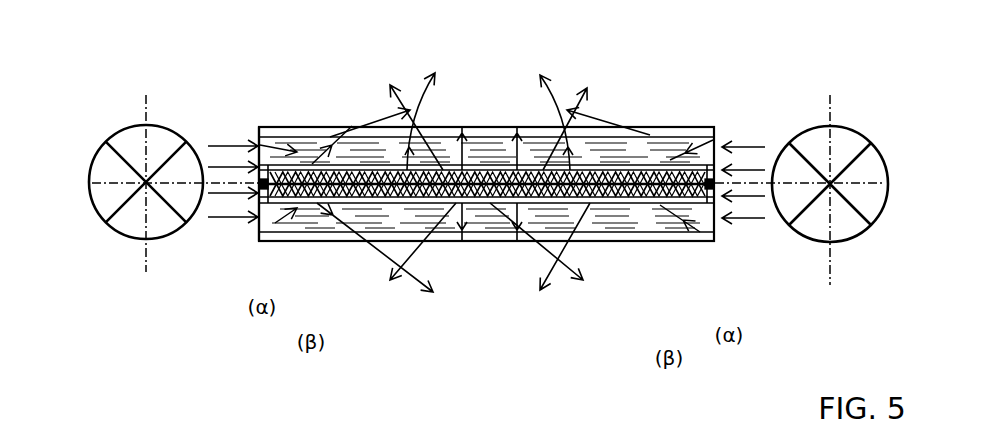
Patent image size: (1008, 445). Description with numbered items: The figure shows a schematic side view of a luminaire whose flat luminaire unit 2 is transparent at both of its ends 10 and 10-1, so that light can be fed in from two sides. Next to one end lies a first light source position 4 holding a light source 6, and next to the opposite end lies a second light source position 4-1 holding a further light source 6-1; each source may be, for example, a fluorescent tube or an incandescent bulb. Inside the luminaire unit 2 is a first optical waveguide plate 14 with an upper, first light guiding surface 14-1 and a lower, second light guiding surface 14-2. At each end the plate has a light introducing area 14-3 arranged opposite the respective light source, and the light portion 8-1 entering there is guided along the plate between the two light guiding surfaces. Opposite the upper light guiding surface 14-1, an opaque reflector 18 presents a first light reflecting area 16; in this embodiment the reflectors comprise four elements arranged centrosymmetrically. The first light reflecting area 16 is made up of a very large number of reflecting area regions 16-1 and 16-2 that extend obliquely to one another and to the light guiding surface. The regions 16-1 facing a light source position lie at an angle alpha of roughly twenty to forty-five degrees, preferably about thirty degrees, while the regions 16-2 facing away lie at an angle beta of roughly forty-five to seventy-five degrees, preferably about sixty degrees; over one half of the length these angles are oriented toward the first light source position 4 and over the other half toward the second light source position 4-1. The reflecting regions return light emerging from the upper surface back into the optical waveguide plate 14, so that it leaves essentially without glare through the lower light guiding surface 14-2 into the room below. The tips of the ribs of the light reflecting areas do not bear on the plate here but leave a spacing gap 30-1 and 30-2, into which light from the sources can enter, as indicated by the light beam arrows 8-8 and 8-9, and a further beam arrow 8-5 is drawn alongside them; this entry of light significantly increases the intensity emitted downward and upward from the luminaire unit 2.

The luminaire unit 2 is at (615, 70).
The first light source position 4 is at (855, 113).
The second light source position 4-1 is at (138, 95).
The light source 6 is at (882, 160).
The light source 6-1 is at (90, 174).
The light portion 8-1 is at (222, 220).
The air flow 8-5 is at (232, 146).
The light beam arrow 8-8 is at (213, 196).
The light beam arrow 8-9 is at (212, 166).
The end 10 is at (717, 132).
The end 10-1 is at (259, 148).
The first optical waveguide plate 14 is at (700, 140).
The first light guiding surface 14-1 is at (503, 170).
The second light guiding surface 14-2 is at (474, 128).
The light introducing area 14-3 is at (257, 132).
The first light reflecting area 16 is at (655, 168).
The reflecting area region 16-1 is at (266, 205).
The reflecting area region 16-2 is at (290, 205).
The opaque reflector 18 is at (305, 168).
The spacing gap 30-1 is at (603, 243).
The spacing gap 30-2 is at (661, 172).